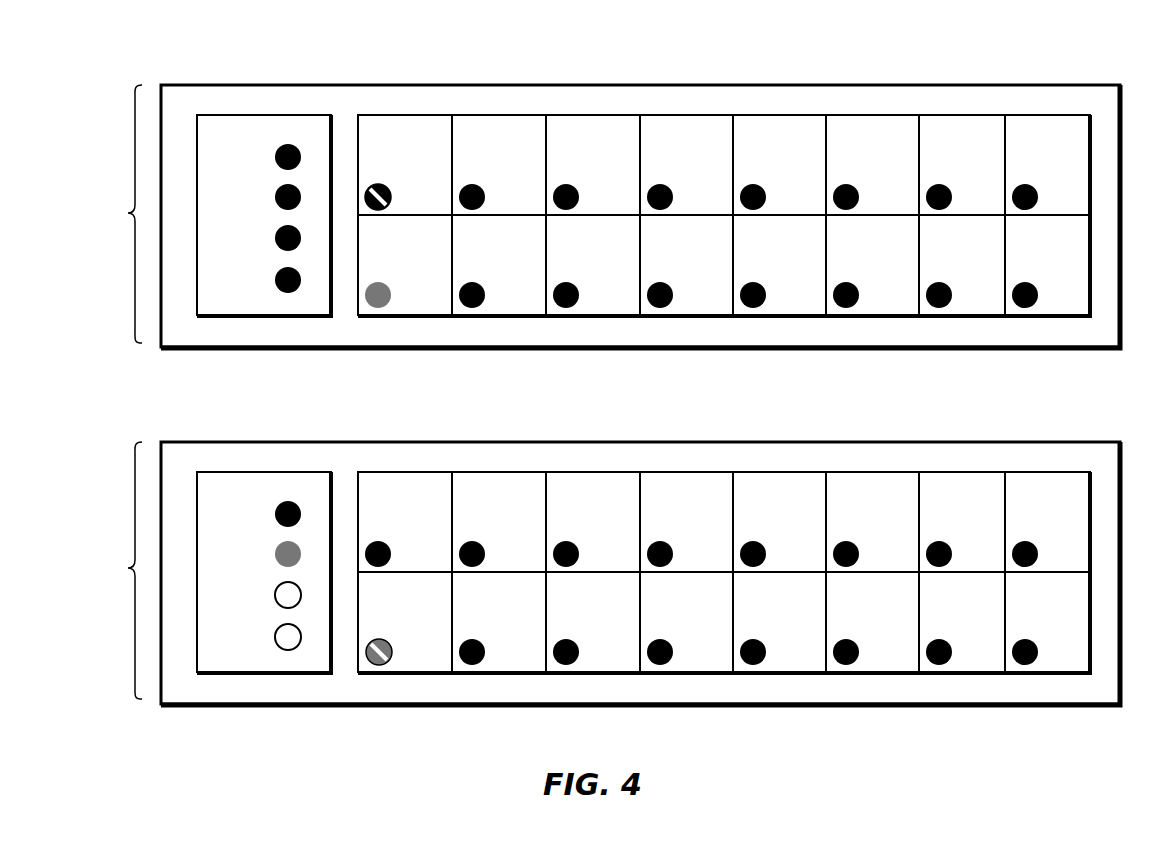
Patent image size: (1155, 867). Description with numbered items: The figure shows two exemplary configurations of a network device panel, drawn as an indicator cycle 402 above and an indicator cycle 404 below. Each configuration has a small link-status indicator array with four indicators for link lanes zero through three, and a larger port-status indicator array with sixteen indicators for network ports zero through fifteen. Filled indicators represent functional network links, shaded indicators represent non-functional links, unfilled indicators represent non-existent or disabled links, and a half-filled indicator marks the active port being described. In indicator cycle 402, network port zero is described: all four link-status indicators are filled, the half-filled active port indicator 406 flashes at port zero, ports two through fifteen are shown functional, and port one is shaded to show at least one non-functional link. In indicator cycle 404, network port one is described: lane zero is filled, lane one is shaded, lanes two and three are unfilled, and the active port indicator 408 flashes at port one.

The indicator cycle 402 is at (102, 214).
The indicator cycle 404 is at (102, 570).
The active port indicator 406 is at (378, 185).
The active port indicator 408 is at (374, 664).